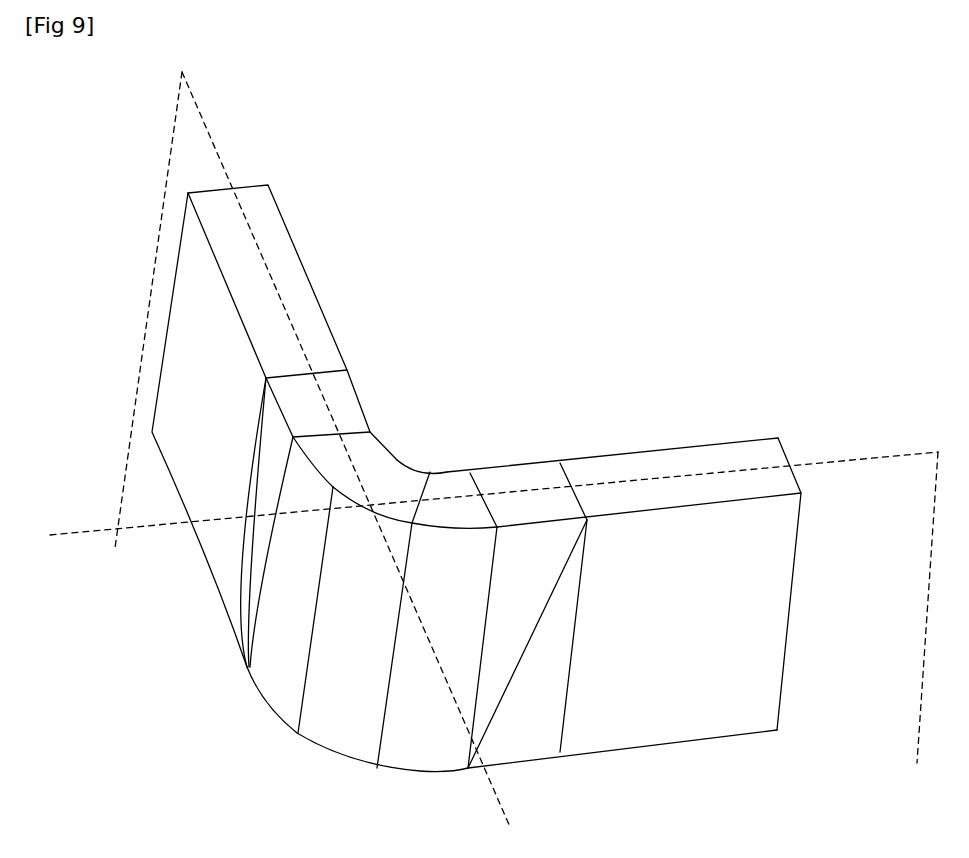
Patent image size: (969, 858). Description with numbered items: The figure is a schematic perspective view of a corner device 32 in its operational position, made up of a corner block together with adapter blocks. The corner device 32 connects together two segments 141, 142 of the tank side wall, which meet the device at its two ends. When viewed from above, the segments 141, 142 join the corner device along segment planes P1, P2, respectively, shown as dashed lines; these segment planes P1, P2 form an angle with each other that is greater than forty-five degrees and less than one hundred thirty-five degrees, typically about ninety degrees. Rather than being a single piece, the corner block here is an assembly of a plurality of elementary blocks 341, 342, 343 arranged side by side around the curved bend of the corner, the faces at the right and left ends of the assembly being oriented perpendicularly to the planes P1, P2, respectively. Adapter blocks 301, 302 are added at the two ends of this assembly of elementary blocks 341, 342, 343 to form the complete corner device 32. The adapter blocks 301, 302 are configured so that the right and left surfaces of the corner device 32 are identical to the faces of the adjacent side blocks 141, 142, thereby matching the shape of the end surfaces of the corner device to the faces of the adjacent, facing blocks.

The tank side wall segment 141 is at (273, 277).
The tank side wall segment 142 is at (740, 468).
The adapter block 301 is at (333, 400).
The adapter block 302 is at (557, 487).
The corner device 32 is at (682, 353).
The elementary block 341 is at (360, 452).
The elementary block 342 is at (403, 480).
The elementary block 343 is at (468, 500).
The segment plane P1 is at (312, 449).
The segment plane P2 is at (494, 607).